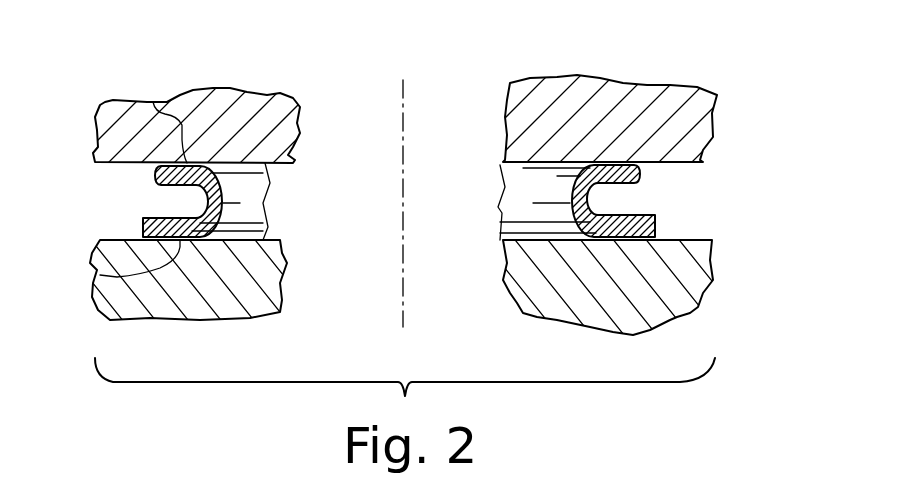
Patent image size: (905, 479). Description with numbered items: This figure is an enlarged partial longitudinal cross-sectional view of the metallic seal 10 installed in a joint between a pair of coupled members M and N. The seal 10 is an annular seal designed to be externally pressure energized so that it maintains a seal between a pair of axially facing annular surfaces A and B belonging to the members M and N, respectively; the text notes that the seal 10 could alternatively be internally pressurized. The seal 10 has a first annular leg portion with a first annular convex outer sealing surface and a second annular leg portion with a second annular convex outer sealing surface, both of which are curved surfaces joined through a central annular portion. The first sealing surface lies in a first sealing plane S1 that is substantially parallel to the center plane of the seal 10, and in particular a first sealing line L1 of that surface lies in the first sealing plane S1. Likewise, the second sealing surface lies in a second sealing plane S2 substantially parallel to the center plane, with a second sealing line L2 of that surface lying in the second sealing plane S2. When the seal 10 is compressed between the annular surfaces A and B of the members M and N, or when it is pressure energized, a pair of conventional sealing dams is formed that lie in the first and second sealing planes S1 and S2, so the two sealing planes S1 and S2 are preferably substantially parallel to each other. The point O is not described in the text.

The metallic seal 10 is at (687, 198).
The first sealing line L1 is at (153, 102).
The second sealing line L2 is at (100, 275).
The first sealing plane S1 is at (263, 173).
The second sealing plane S2 is at (265, 233).
The axially facing annular surface A is at (116, 172).
The axially facing annular surface B is at (115, 240).
The member M is at (500, 93).
The member N is at (503, 287).
The center point O is at (405, 193).